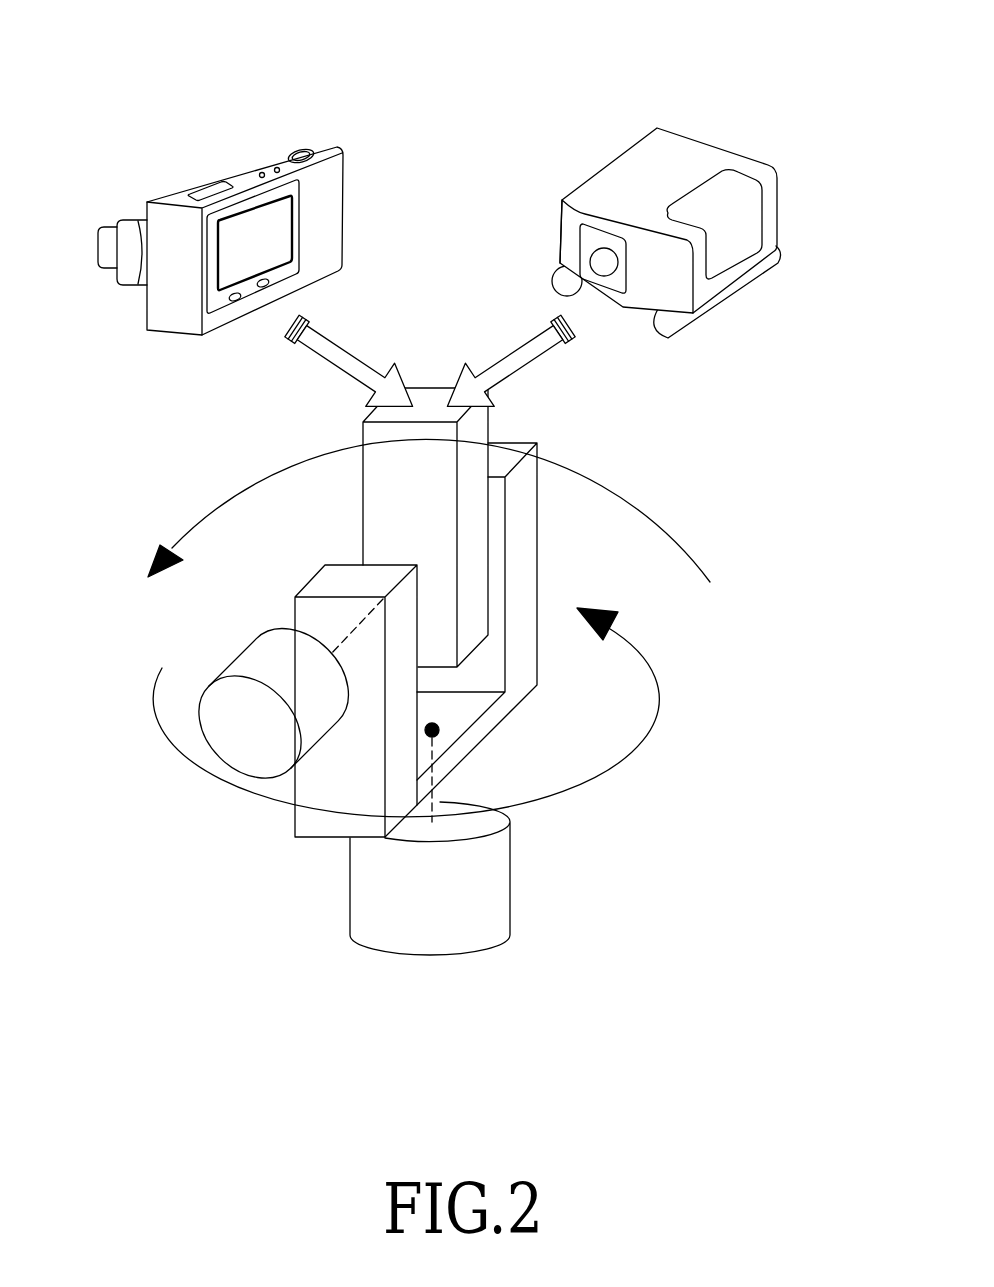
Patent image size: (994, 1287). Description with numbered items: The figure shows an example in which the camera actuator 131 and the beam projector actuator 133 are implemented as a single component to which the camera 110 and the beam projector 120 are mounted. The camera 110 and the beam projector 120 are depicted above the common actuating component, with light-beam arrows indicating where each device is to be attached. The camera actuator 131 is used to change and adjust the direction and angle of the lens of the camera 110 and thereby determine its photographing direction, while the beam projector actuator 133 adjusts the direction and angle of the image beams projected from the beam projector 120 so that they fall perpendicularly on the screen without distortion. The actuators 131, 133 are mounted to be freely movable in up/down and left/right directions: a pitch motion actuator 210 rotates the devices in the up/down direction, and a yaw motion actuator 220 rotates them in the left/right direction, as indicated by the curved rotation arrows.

The camera 110 is at (223, 173).
The beam projector 120 is at (703, 143).
The camera actuator 131 is at (567, 612).
The beam projector actuator 133 is at (537, 560).
The lens unit 210 is at (230, 657).
The base 220 is at (430, 955).